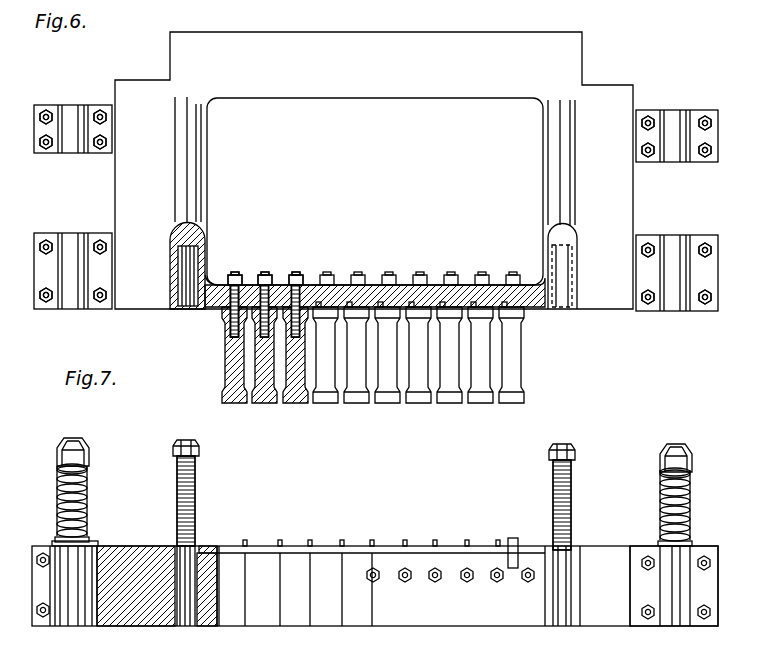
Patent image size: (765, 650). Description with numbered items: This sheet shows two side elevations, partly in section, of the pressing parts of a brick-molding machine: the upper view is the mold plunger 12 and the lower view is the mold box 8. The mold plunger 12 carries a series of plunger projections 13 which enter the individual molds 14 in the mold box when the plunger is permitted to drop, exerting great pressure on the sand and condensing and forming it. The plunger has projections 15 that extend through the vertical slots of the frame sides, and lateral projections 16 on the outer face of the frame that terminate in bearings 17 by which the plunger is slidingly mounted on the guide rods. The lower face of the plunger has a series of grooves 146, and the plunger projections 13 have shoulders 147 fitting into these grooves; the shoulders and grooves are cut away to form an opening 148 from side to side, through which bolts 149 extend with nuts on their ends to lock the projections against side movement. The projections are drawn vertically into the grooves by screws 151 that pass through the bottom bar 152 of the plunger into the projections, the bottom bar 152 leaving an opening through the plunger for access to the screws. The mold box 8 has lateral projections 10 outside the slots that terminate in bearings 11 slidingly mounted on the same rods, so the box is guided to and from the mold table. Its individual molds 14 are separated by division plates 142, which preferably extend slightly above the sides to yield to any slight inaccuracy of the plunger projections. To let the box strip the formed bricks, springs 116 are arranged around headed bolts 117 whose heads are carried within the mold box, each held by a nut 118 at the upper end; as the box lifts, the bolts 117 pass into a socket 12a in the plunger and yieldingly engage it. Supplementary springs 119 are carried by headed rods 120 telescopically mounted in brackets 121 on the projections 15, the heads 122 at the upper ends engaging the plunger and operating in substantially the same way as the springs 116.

In FIG. 7, the mold box 8 is at (442, 612).
In FIG. 7, the lateral projections 10 is at (138, 553).
In FIG. 7, the bearings 11 is at (698, 553).
In FIG. 6, the mold plunger 12 is at (376, 203).
In FIG. 6, the socket 12a is at (185, 300).
In FIG. 6, the plunger projections 13 is at (228, 365).
In FIG. 7, the individual molds 14 is at (288, 562).
In FIG. 6, the projections 15 is at (125, 201).
In FIG. 6, the lateral projections 16 is at (113, 153).
In FIG. 6, the bearings 17 is at (72, 148).
In FIG. 7, the springs 116 is at (198, 497).
In FIG. 7, the headed bolts 117 is at (200, 547).
In FIG. 7, the nut 118 is at (200, 450).
In FIG. 7, the springs 119 is at (88, 497).
In FIG. 7, the headed rods 120 is at (87, 478).
In FIG. 7, the brackets 121 is at (95, 543).
In FIG. 7, the heads 122 is at (88, 451).
In FIG. 7, the division plates 142 is at (343, 549).
In FIG. 6, the grooves 146 is at (223, 278).
In FIG. 6, the shoulders 147 is at (246, 292).
In FIG. 6, the opening 148 is at (220, 306).
In FIG. 6, the bolts 149 is at (317, 300).
In FIG. 6, the screws 151 is at (236, 280).
In FIG. 6, the bottom bar 152 is at (431, 285).